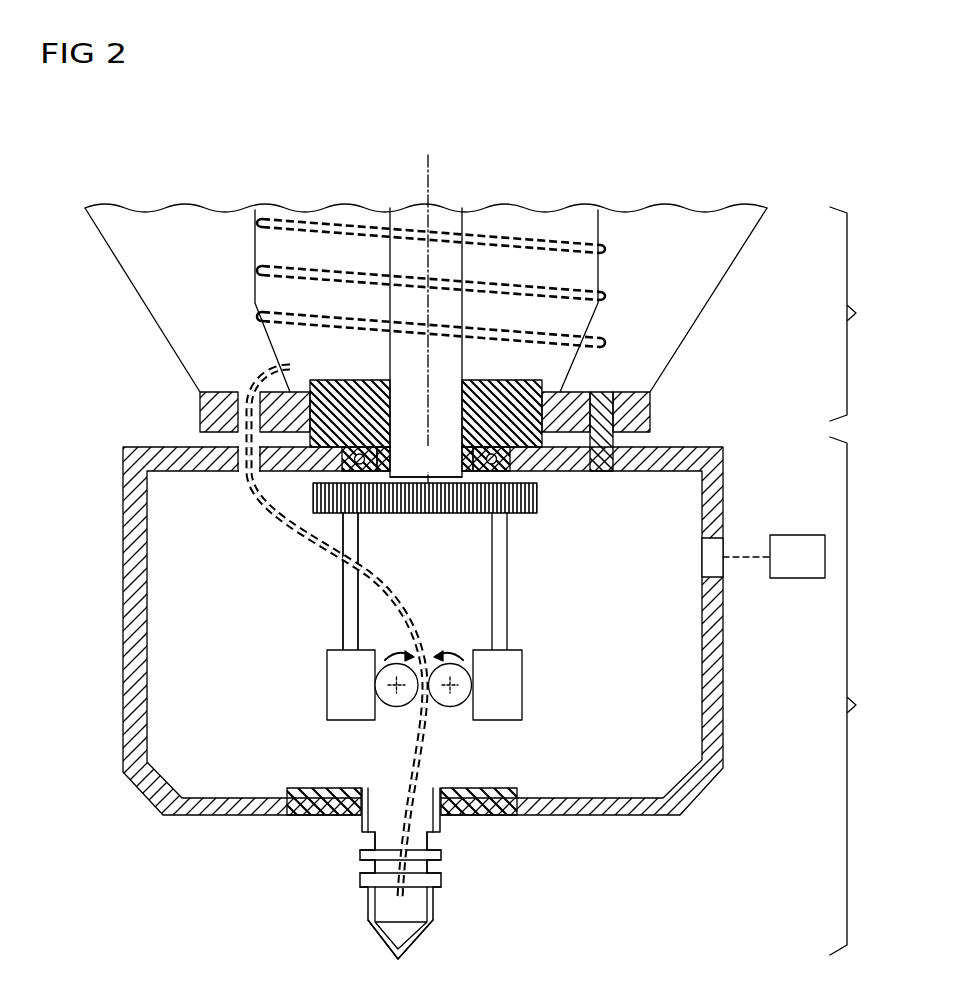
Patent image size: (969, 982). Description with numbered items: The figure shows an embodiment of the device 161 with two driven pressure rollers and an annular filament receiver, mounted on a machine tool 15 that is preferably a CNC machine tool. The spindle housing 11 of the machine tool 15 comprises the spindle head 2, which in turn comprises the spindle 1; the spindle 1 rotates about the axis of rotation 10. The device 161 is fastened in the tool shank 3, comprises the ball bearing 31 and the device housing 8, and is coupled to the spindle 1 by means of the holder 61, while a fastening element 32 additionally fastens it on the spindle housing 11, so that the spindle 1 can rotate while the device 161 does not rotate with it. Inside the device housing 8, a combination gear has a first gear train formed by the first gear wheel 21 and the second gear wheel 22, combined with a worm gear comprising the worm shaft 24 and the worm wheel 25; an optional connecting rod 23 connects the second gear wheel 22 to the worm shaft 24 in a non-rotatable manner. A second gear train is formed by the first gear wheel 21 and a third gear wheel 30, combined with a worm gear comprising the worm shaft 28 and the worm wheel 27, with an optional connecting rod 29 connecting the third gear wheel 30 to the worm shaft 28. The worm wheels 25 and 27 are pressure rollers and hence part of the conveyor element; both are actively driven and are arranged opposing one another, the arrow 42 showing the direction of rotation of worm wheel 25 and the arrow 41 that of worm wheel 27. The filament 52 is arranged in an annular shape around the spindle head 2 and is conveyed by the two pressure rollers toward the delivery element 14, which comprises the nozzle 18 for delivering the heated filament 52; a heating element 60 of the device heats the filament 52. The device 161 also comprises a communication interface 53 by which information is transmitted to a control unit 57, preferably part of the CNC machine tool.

The spindle 1 is at (403, 216).
The spindle head 2 is at (318, 212).
The tool shank 3 is at (335, 392).
The device housing 8 is at (122, 629).
The axis of rotation 10 is at (430, 170).
The spindle housing 11 is at (176, 230).
The delivery element 14 is at (315, 817).
The machine tool 15 is at (860, 314).
The nozzle 18 is at (424, 938).
The first gear wheel 21 is at (432, 516).
The second gear wheel 22 is at (538, 497).
The connecting rod 23 is at (508, 578).
The worm shaft 24 is at (523, 684).
The worm wheel 25 is at (447, 708).
The worm wheel 27 is at (388, 708).
The worm shaft 28 is at (326, 689).
The connecting rod 29 is at (342, 604).
The third gear wheel 30 is at (372, 516).
The ball bearing 31 is at (356, 446).
The fastening element 32 is at (614, 410).
The arrow 41 is at (393, 652).
The arrow 42 is at (453, 652).
The filament 52 is at (605, 297).
The communication interface 53 is at (712, 563).
The control unit 57 is at (794, 534).
The heating element 60 is at (330, 817).
The holder 61 is at (403, 475).
The device 161 is at (867, 696).